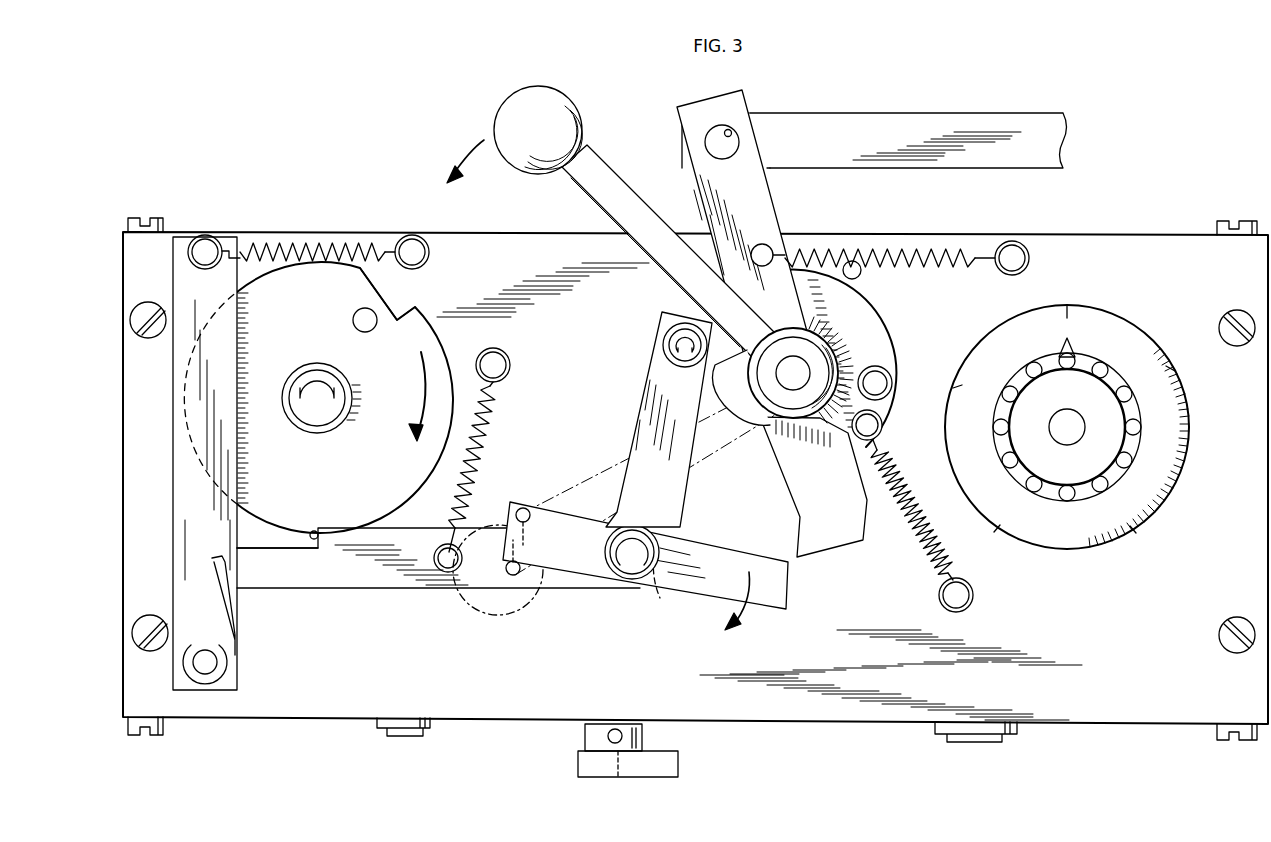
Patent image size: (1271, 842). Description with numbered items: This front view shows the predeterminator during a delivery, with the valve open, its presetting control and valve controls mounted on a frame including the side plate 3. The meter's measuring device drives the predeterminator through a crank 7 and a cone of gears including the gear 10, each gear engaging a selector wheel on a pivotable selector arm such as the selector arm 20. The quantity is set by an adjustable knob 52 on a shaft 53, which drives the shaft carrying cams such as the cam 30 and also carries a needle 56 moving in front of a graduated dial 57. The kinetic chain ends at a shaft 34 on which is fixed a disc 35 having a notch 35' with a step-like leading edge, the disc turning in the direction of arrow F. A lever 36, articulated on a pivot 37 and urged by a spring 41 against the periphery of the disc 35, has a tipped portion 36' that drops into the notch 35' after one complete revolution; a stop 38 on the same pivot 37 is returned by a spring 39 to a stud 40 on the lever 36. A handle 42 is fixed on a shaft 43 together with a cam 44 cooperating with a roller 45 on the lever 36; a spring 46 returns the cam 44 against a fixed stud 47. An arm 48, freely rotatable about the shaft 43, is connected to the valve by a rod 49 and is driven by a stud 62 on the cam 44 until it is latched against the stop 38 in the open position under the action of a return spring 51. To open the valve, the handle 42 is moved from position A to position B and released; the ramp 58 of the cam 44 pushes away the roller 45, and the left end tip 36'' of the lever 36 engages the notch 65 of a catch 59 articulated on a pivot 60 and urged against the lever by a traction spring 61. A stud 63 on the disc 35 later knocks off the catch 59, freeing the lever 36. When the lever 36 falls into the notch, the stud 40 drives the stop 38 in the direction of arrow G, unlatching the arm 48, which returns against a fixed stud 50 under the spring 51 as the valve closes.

The side plate 3 is at (890, 727).
The crank 7 is at (657, 763).
The gear 10 is at (1067, 323).
The selector arm 20 is at (1168, 385).
The cam 30 is at (1131, 521).
The shaft 34 is at (314, 390).
The disc 35 is at (318, 397).
The notch 35' is at (402, 294).
The lever 36 is at (438, 582).
The tipped portion 36' is at (330, 554).
The end tip 36'' is at (277, 562).
The pivot 37 is at (630, 560).
The stop 38 is at (699, 573).
The spring 39 is at (463, 563).
The stud 40 is at (520, 575).
The spring 41 is at (487, 447).
The handle 42 is at (622, 204).
The shaft 43 is at (788, 376).
The cam 44 is at (846, 337).
The roller 45 is at (666, 336).
The spring 46 is at (930, 556).
The fixed stud 47 is at (855, 442).
The arm 48 is at (821, 538).
The rod 49 is at (845, 122).
The fixed stud 50 is at (859, 276).
The return spring 51 is at (858, 263).
The adjustable knob 52 is at (1105, 443).
The shaft 53 is at (1066, 424).
The needle 56 is at (1076, 346).
The graduated dial 57 is at (1088, 427).
The ramp 58 is at (748, 250).
The catch 59 is at (182, 292).
The pivot 60 is at (210, 660).
The traction spring 61 is at (328, 247).
The stud 62 is at (878, 385).
The stud 63 is at (354, 318).
The notch 65 is at (222, 556).
The position A is at (465, 157).
The position B is at (483, 624).
The arrow F is at (416, 396).
The arrow G is at (739, 606).